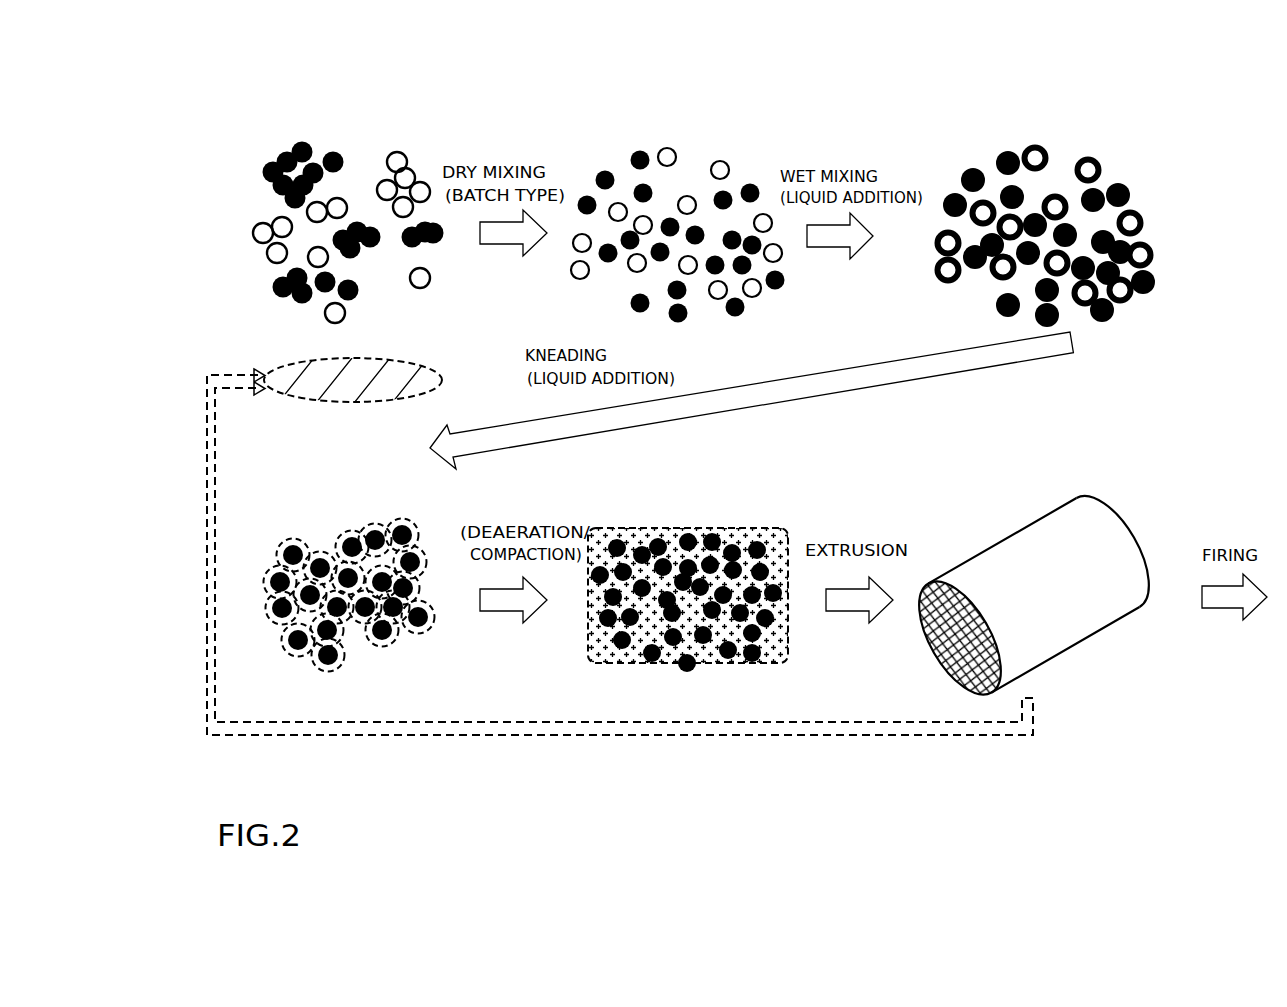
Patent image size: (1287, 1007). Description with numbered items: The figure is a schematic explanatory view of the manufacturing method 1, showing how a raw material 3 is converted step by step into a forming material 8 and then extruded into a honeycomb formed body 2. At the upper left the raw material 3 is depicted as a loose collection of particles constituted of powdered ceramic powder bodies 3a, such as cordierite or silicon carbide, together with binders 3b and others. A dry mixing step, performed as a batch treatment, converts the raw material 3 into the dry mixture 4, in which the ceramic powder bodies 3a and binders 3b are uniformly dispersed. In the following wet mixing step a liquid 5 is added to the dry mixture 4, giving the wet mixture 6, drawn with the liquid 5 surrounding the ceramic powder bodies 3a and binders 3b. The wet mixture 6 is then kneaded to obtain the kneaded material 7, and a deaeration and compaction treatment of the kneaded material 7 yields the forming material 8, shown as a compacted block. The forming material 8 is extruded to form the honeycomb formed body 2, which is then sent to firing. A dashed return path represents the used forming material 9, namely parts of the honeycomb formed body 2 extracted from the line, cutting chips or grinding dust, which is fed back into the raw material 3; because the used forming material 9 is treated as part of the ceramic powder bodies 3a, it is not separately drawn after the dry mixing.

The manufacturing method 1 is at (509, 113).
The honeycomb formed body 2 is at (1090, 640).
The raw material 3 is at (393, 111).
The ceramic powder bodies 3a is at (376, 247).
The binders 3b is at (332, 313).
The dry mixture 4 is at (749, 111).
The liquid 5 is at (1047, 152).
The wet mixture 6 is at (1087, 111).
The kneaded material 7 is at (400, 477).
The forming material 8 is at (750, 475).
The used forming material 9 is at (444, 383).